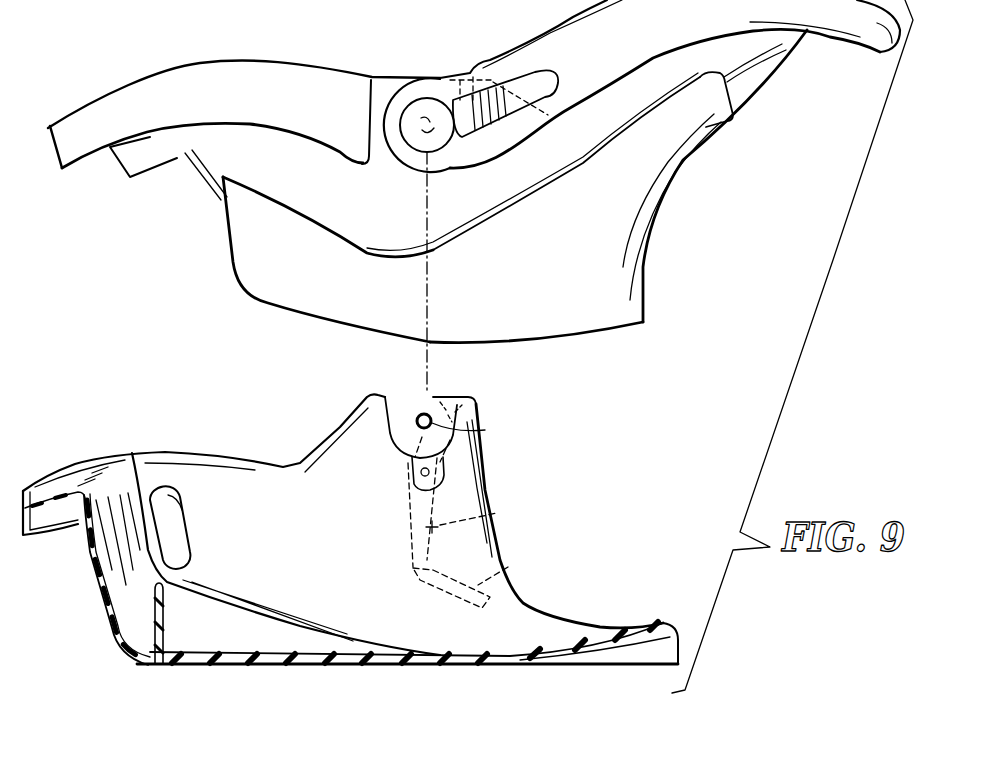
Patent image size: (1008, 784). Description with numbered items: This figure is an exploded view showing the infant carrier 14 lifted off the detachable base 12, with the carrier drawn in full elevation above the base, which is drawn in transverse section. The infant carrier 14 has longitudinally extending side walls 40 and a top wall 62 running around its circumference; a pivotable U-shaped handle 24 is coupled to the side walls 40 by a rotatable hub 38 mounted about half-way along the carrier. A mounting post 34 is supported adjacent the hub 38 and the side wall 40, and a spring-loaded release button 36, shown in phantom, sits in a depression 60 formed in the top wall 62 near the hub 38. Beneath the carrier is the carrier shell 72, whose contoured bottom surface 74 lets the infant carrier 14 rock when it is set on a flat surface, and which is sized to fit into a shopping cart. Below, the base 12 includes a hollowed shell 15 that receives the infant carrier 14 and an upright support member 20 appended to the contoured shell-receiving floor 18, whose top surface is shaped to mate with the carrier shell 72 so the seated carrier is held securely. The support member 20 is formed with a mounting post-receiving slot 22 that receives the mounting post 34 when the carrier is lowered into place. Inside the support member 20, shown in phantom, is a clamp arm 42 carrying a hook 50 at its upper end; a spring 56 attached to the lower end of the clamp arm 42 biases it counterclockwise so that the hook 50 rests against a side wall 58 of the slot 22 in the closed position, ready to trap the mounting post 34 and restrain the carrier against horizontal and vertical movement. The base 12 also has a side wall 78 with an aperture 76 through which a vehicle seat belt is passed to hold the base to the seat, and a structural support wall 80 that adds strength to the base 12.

The detachable base 12 is at (126, 449).
The infant carrier 14 is at (95, 88).
The shell 15 is at (350, 97).
The contoured shell-receiving floor 18 is at (304, 626).
The upright support member 20 is at (493, 407).
The mounting post-receiving slot 22 is at (428, 382).
The pivotable U-shaped handle 24 is at (877, 28).
The mounting post 34 is at (418, 100).
The release button 36 is at (552, 112).
The rotatable hub 38 is at (428, 97).
The side wall 40 is at (317, 170).
The clamp arm 42 is at (507, 512).
The hook 50 is at (418, 413).
The spring 56 is at (510, 565).
The side wall of the mounting post-receiving slot 58 is at (485, 430).
The depression 60 is at (464, 58).
The top wall 62 is at (190, 65).
The carrier shell 72 is at (648, 243).
The bottom surface 74 is at (636, 322).
The aperture 76 is at (165, 490).
The side wall of the base 78 is at (292, 542).
The structural support wall 80 is at (153, 607).